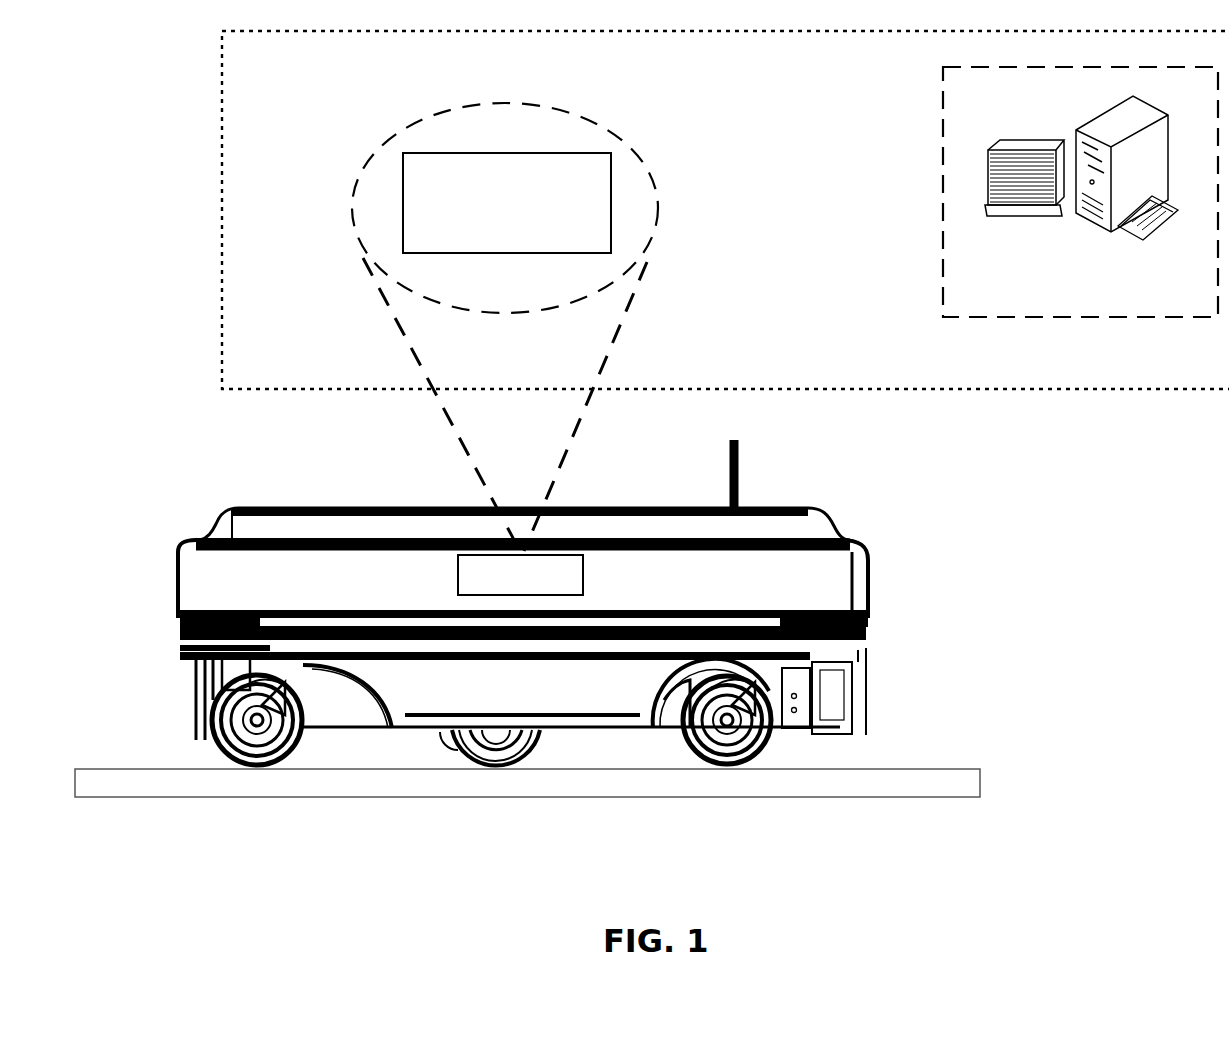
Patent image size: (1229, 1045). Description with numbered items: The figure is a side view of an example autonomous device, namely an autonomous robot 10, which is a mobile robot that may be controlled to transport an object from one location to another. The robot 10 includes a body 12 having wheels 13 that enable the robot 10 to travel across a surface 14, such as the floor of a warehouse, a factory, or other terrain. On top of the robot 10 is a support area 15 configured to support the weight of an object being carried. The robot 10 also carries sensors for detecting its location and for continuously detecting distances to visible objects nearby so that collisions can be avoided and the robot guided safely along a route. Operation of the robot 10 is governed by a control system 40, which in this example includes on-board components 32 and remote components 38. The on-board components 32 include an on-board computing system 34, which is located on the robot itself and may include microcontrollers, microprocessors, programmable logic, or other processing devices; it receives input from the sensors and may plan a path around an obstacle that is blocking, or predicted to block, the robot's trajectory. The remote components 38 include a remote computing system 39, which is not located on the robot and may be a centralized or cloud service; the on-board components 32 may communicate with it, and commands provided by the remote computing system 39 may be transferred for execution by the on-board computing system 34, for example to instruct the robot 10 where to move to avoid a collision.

The autonomous robot 10 is at (142, 484).
The body 12 is at (805, 540).
The wheels 13 is at (215, 746).
The surface 14 is at (190, 789).
The support area 15 is at (402, 515).
The on-board components 32 is at (358, 212).
The on-board computing system 34 is at (610, 173).
The remote components 38 is at (947, 170).
The remote computing system 39 is at (1042, 142).
The control system 40 is at (247, 288).